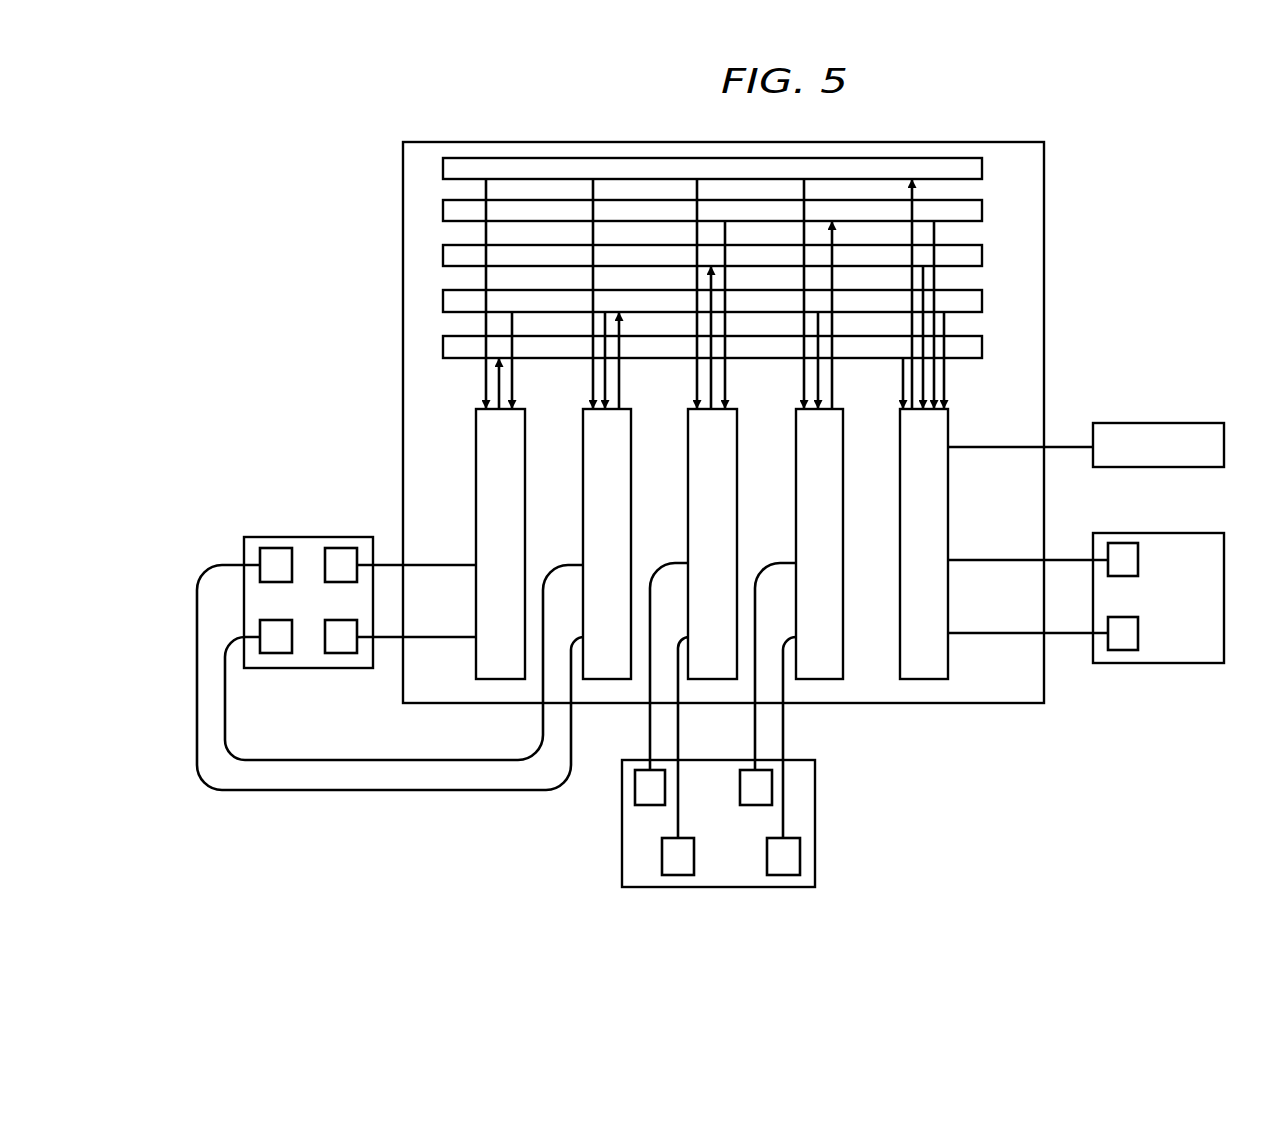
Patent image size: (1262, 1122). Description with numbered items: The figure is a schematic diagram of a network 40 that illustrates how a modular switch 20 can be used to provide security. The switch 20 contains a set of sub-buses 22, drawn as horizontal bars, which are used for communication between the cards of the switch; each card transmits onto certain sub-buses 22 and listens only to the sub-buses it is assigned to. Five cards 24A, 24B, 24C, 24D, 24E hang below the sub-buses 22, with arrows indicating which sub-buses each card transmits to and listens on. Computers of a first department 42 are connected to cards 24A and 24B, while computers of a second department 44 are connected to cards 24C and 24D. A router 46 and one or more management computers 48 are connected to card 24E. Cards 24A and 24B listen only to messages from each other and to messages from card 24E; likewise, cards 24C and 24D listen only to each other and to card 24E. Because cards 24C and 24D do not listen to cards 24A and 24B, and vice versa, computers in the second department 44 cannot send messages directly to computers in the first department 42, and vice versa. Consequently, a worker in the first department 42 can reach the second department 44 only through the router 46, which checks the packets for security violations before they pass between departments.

The network 40 is at (418, 102).
The modular switch 20 is at (452, 142).
The sub-buses 22 is at (983, 170).
The card 24A is at (476, 410).
The card 24B is at (583, 410).
The card 24C is at (688, 410).
The card 24D is at (796, 410).
The card 24E is at (900, 410).
The first department 42 is at (311, 537).
The second department 44 is at (816, 777).
The router 46 is at (1162, 423).
The management computers 48 is at (1139, 562).